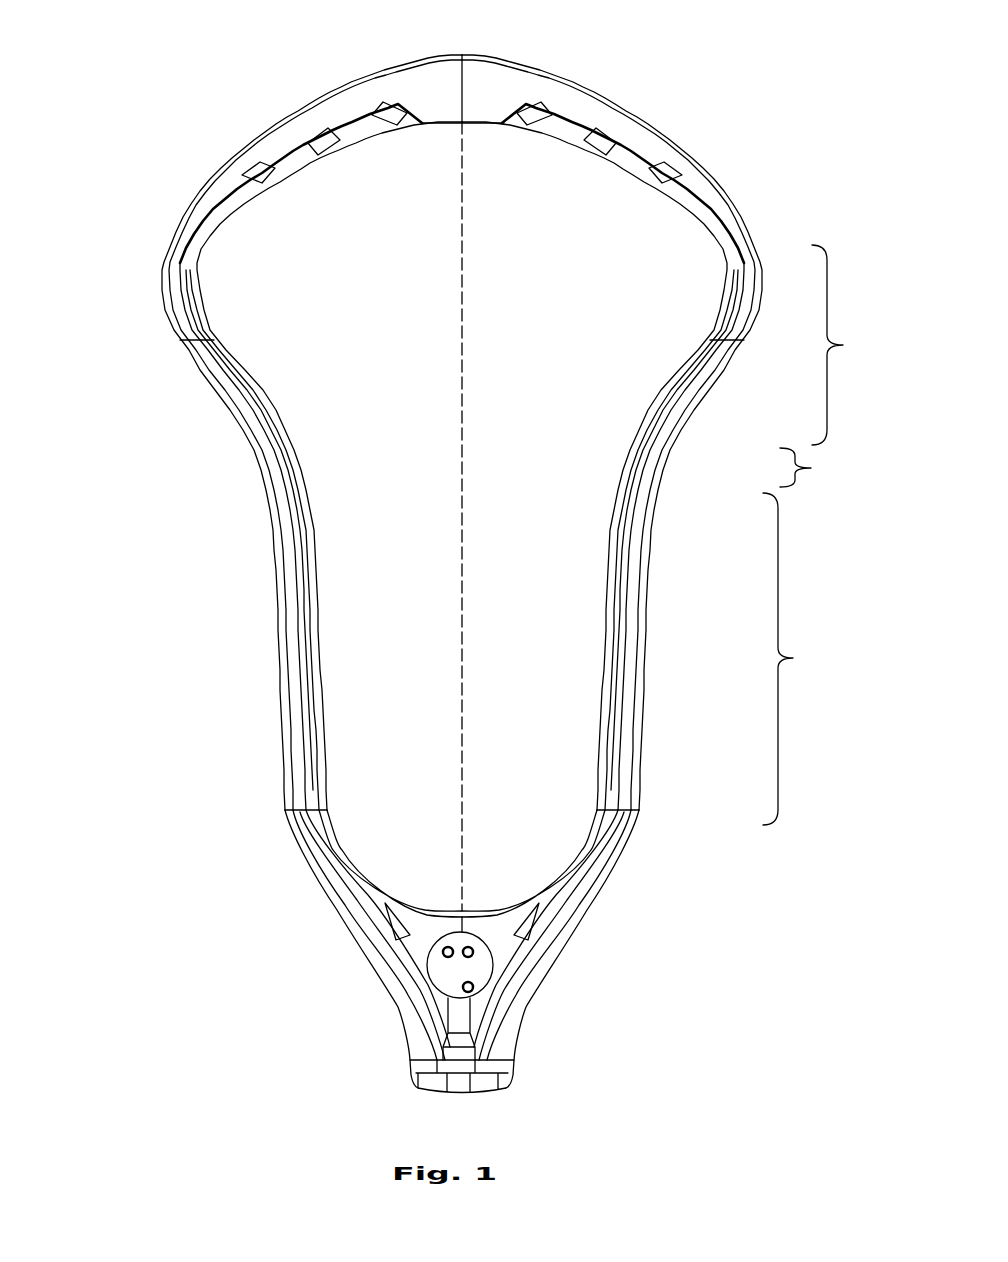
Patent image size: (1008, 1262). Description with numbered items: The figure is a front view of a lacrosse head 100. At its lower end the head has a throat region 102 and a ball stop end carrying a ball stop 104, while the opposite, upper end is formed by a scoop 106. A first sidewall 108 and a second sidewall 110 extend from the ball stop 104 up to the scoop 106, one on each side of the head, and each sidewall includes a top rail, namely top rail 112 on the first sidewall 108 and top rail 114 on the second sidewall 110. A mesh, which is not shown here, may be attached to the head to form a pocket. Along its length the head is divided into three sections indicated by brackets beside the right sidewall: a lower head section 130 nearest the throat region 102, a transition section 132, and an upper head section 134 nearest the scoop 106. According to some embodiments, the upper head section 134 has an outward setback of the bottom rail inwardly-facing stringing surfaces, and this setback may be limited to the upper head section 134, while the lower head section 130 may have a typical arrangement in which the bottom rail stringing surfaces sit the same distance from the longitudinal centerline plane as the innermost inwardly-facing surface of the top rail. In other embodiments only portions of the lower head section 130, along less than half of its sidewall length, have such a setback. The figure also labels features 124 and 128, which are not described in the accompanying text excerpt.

The lacrosse head 100 is at (160, 87).
The throat region 102 is at (410, 1012).
The ball stop 104 is at (460, 910).
The scoop 106 is at (427, 87).
The first sidewall 108 is at (285, 615).
The second sidewall 110 is at (635, 748).
The top rail 112 is at (302, 650).
The top rail 114 is at (620, 763).
The string holes 124 is at (390, 112).
The central longitudinal axis 128 is at (462, 293).
The lower head section 130 is at (800, 659).
The transition section 132 is at (820, 467).
The upper head section 134 is at (853, 345).